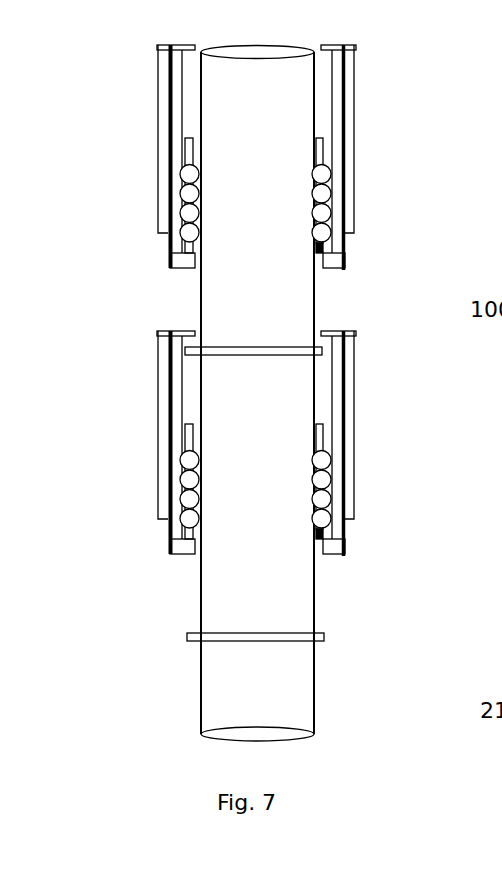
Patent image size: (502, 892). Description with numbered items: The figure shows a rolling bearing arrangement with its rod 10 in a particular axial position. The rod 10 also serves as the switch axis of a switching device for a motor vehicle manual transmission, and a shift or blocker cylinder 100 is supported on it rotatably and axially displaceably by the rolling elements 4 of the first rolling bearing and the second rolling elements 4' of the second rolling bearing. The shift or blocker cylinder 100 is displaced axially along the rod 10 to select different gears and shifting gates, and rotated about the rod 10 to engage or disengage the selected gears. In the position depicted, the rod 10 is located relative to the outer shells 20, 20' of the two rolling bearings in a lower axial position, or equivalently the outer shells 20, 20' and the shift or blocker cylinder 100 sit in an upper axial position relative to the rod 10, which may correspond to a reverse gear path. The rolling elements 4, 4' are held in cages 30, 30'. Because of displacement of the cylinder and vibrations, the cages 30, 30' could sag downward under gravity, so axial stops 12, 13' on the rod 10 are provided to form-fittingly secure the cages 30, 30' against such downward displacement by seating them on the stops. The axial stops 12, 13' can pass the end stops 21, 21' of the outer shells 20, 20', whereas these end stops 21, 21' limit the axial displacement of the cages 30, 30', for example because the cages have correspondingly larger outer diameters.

The rod 10 is at (285, 684).
The axial stop 12 is at (253, 348).
The axial stop 13' is at (314, 602).
The shift or blocker cylinder 100 is at (277, 201).
The outer shell 20 is at (316, 157).
The rolling elements 4 is at (302, 195).
The cage 30 is at (396, 222).
The end stop 21 is at (136, 305).
The outer shell 20' is at (319, 443).
The second rolling elements 4' is at (305, 481).
The cage 30' is at (399, 508).
The end stop 21' is at (136, 592).